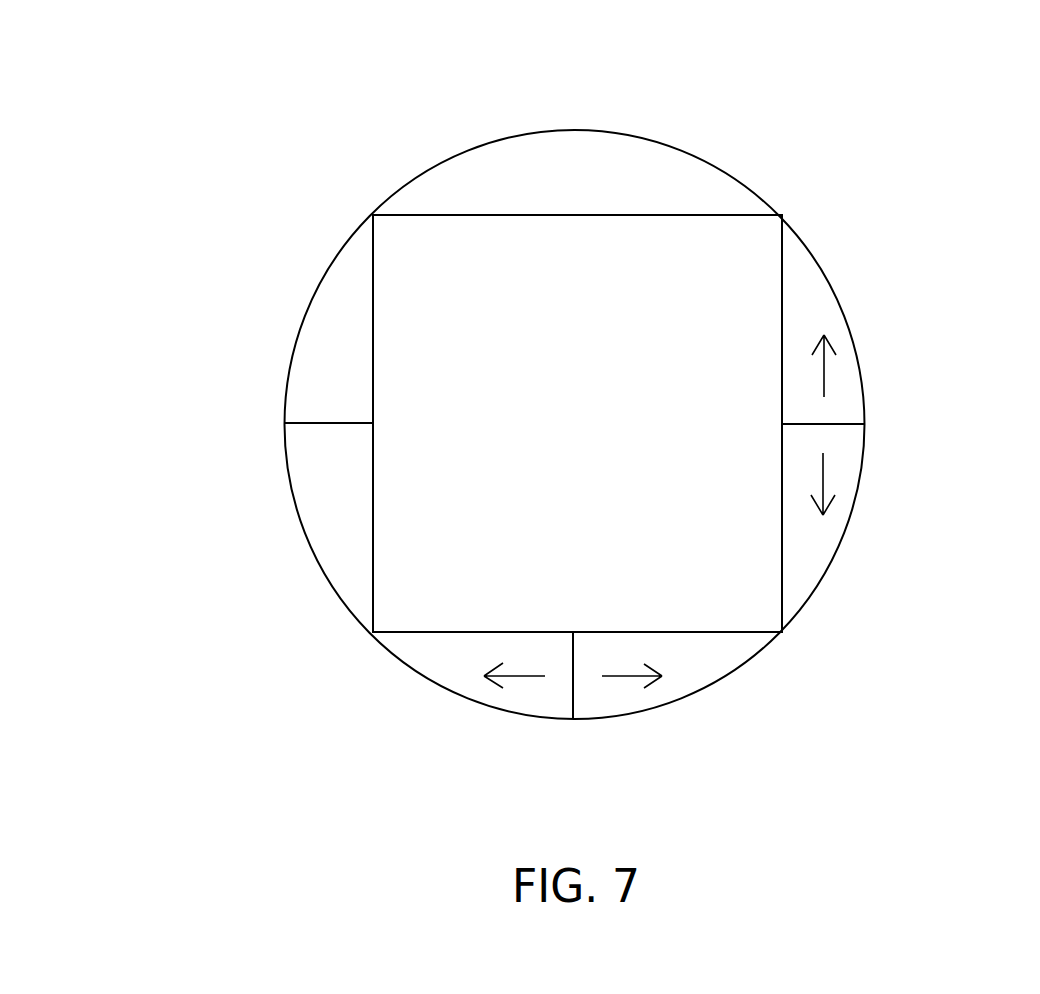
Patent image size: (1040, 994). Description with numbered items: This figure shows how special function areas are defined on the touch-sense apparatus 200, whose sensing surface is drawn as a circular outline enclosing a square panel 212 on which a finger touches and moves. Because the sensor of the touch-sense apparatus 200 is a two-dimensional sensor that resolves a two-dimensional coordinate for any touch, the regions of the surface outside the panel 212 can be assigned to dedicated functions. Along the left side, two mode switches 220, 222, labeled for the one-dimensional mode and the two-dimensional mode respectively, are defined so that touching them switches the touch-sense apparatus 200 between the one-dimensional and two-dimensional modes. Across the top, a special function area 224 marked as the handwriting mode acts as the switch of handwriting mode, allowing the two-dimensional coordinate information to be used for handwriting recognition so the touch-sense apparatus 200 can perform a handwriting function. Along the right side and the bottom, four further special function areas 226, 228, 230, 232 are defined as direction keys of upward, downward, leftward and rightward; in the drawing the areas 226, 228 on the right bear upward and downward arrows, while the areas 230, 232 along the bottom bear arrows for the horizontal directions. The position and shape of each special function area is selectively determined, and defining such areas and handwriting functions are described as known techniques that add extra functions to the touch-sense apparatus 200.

The touch-sense apparatus 200 is at (932, 152).
The panel 212 is at (782, 217).
The mode switch 220 is at (310, 325).
The mode switch 222 is at (307, 505).
The special function area 224 is at (583, 145).
The special function area 226 is at (822, 293).
The special function area 228 is at (842, 507).
The special function area 230 is at (703, 672).
The special function area 232 is at (493, 693).